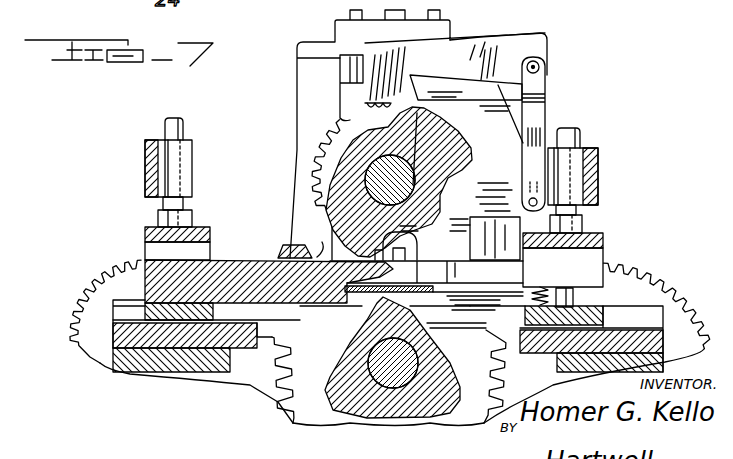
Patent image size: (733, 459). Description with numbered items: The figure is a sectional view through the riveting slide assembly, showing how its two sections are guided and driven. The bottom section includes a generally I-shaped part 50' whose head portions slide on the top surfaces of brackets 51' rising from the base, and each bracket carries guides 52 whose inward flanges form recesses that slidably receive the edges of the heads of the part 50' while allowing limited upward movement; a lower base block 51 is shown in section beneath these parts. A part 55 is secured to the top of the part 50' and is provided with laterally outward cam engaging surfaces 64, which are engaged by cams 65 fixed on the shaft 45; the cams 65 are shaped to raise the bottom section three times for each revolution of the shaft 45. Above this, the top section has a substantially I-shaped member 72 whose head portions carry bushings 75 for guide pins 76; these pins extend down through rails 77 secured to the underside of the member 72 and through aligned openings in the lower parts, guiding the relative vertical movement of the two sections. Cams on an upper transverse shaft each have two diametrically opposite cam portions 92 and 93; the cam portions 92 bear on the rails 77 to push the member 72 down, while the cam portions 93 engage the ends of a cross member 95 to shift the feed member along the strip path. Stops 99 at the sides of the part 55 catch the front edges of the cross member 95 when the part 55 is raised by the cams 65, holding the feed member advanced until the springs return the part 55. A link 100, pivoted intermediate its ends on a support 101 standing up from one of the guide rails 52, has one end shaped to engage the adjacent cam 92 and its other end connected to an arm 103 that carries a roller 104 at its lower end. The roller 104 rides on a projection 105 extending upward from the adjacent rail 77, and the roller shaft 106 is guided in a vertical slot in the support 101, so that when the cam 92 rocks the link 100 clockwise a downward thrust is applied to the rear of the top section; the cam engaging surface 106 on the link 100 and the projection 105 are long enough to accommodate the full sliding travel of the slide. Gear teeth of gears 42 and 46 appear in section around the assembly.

The gear 42 is at (75, 328).
The shaft 45 is at (362, 360).
The gear 46 is at (660, 283).
The I-shaped part 50' is at (184, 324).
The base block 51 is at (181, 373).
The bracket 51' is at (610, 373).
The guide 52 is at (663, 333).
The part 55 is at (240, 268).
The cam engaging surface 64 is at (412, 291).
The cam 65 is at (343, 403).
The member 72 is at (208, 236).
The bushing 75 is at (160, 218).
The guide pin 76 is at (186, 130).
The rail 77 is at (483, 278).
The cam portion 92 is at (417, 247).
The cam portion 93 is at (441, 125).
The cross member 95 is at (288, 246).
The stop 99 is at (314, 243).
The link 100 is at (505, 37).
The support 101 is at (510, 146).
The arm 103 is at (538, 132).
The roller 104 is at (548, 211).
The projection 105 is at (492, 218).
The shaft of the roller 106 is at (338, 117).